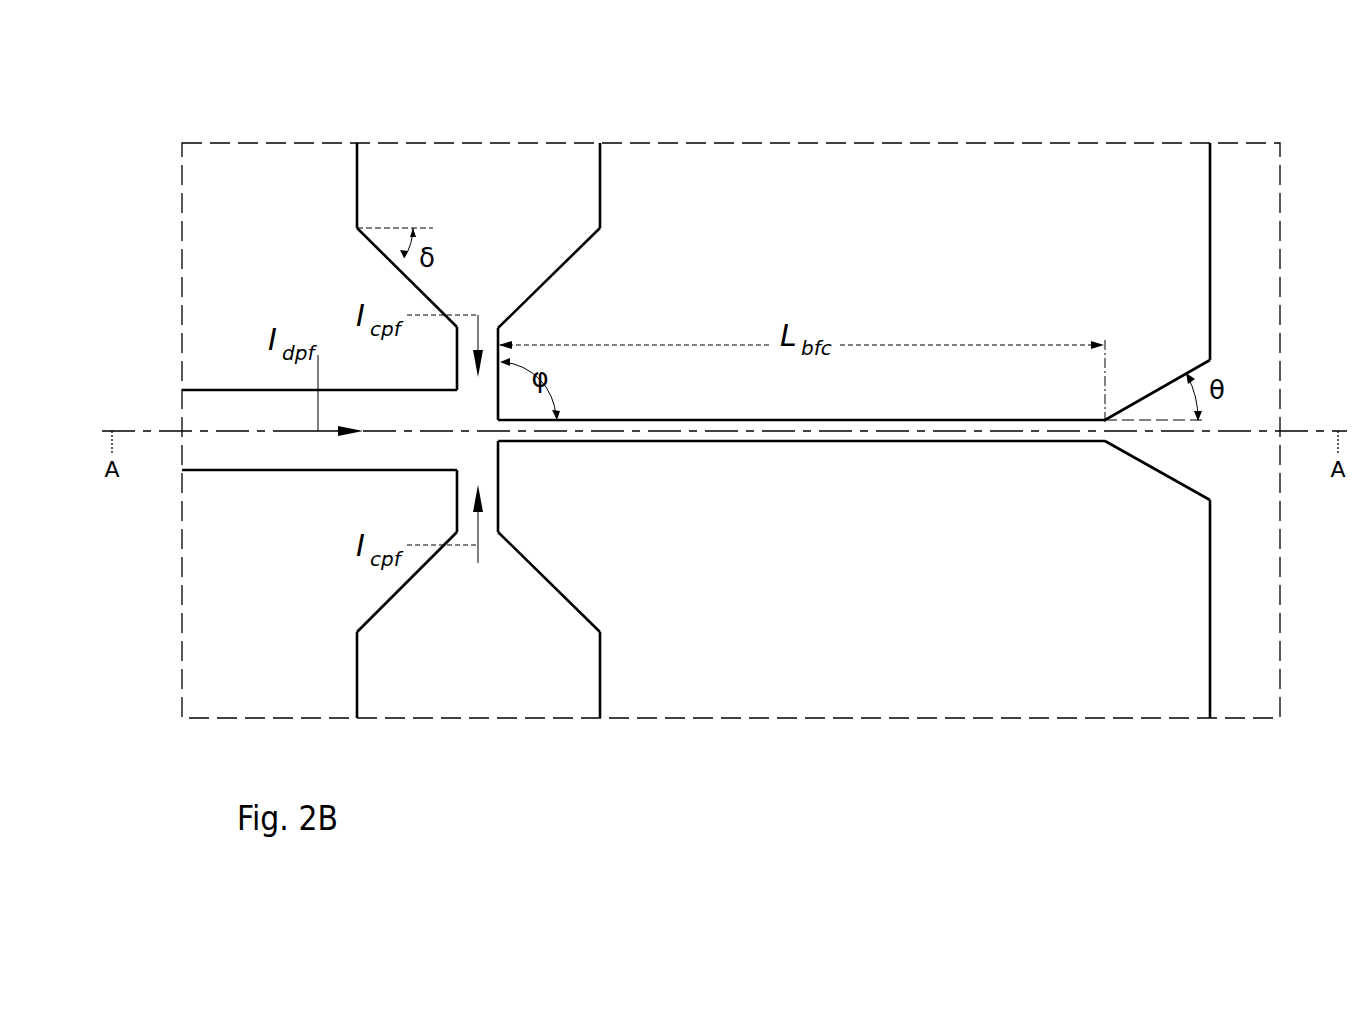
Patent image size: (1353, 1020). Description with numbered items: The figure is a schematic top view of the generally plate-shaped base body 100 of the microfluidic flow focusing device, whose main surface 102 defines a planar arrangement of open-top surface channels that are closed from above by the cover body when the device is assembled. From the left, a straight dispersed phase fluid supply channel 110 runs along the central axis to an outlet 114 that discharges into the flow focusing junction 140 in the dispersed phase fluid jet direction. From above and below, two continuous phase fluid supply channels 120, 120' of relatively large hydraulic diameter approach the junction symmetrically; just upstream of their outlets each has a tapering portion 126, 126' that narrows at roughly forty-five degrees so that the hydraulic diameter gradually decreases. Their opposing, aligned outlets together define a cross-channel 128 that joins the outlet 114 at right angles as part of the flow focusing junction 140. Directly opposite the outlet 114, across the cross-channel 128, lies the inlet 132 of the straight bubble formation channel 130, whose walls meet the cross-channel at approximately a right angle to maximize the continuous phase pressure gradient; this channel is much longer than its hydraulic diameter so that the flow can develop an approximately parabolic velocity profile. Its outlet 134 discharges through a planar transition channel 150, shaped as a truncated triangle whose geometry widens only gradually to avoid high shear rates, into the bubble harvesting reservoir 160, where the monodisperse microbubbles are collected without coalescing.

The base body 100 is at (768, 192).
The main surface 102 is at (899, 678).
The dispersed phase fluid supply channel 110 is at (225, 448).
The outlet of the dispersed phase fluid supply channel 114 is at (445, 430).
The continuous phase fluid supply channel 120 is at (514, 185).
The continuous phase fluid supply channel 120' is at (516, 675).
The tapering portion 126 is at (514, 278).
The tapering portion 126' is at (516, 582).
The cross-channel 128 is at (478, 390).
The bubble formation channel 130 is at (918, 430).
The inlet of the bubble formation channel 132 is at (498, 430).
The outlet of the bubble formation channel 134 is at (1105, 430).
The flow focusing junction 140 is at (478, 430).
The transition channel 150 is at (1169, 441).
The bubble harvesting reservoir 160 is at (1238, 643).